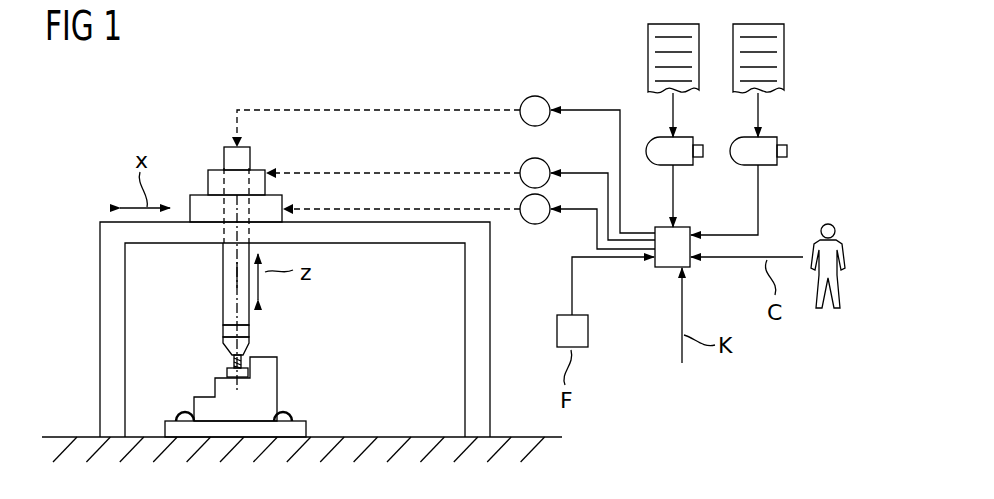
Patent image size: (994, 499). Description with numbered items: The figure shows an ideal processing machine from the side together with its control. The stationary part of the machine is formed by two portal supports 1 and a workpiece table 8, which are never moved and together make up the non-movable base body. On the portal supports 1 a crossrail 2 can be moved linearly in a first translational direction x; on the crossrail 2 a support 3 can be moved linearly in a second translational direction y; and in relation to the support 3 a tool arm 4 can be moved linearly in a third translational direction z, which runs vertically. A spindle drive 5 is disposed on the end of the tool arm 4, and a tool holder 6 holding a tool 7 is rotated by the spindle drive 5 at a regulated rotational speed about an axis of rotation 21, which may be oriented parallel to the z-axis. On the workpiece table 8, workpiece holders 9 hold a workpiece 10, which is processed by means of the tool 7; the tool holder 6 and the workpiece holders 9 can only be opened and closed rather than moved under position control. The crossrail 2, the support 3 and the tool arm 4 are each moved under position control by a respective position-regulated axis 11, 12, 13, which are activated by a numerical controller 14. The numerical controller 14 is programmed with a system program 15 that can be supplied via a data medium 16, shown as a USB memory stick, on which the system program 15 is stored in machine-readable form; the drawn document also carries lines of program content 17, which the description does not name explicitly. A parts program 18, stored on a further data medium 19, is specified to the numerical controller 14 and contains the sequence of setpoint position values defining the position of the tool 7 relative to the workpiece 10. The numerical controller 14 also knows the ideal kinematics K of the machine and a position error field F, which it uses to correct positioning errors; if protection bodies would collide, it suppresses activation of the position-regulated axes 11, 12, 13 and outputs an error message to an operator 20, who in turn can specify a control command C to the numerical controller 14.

The portal supports 1 is at (100, 327).
The crossrail 2 is at (197, 195).
The support 3 is at (213, 170).
The tool arm 4 is at (251, 160).
The spindle drive 5 is at (224, 330).
The tool holder 6 is at (228, 347).
The tool 7 is at (226, 371).
The workpiece table 8 is at (308, 426).
The workpiece holders 9 is at (183, 408).
The workpiece 10 is at (263, 357).
The position-regulated axis 11 is at (535, 225).
The position-regulated axis 12 is at (520, 163).
The position-regulated axis 13 is at (537, 96).
The numerical controller 14 is at (665, 270).
The system program 15 is at (648, 32).
The data medium 16 is at (657, 170).
The program instructions 17 is at (656, 78).
The parts program 18 is at (785, 52).
The further data medium 19 is at (768, 170).
The operator 20 is at (842, 312).
The axis of rotation 21 is at (233, 273).